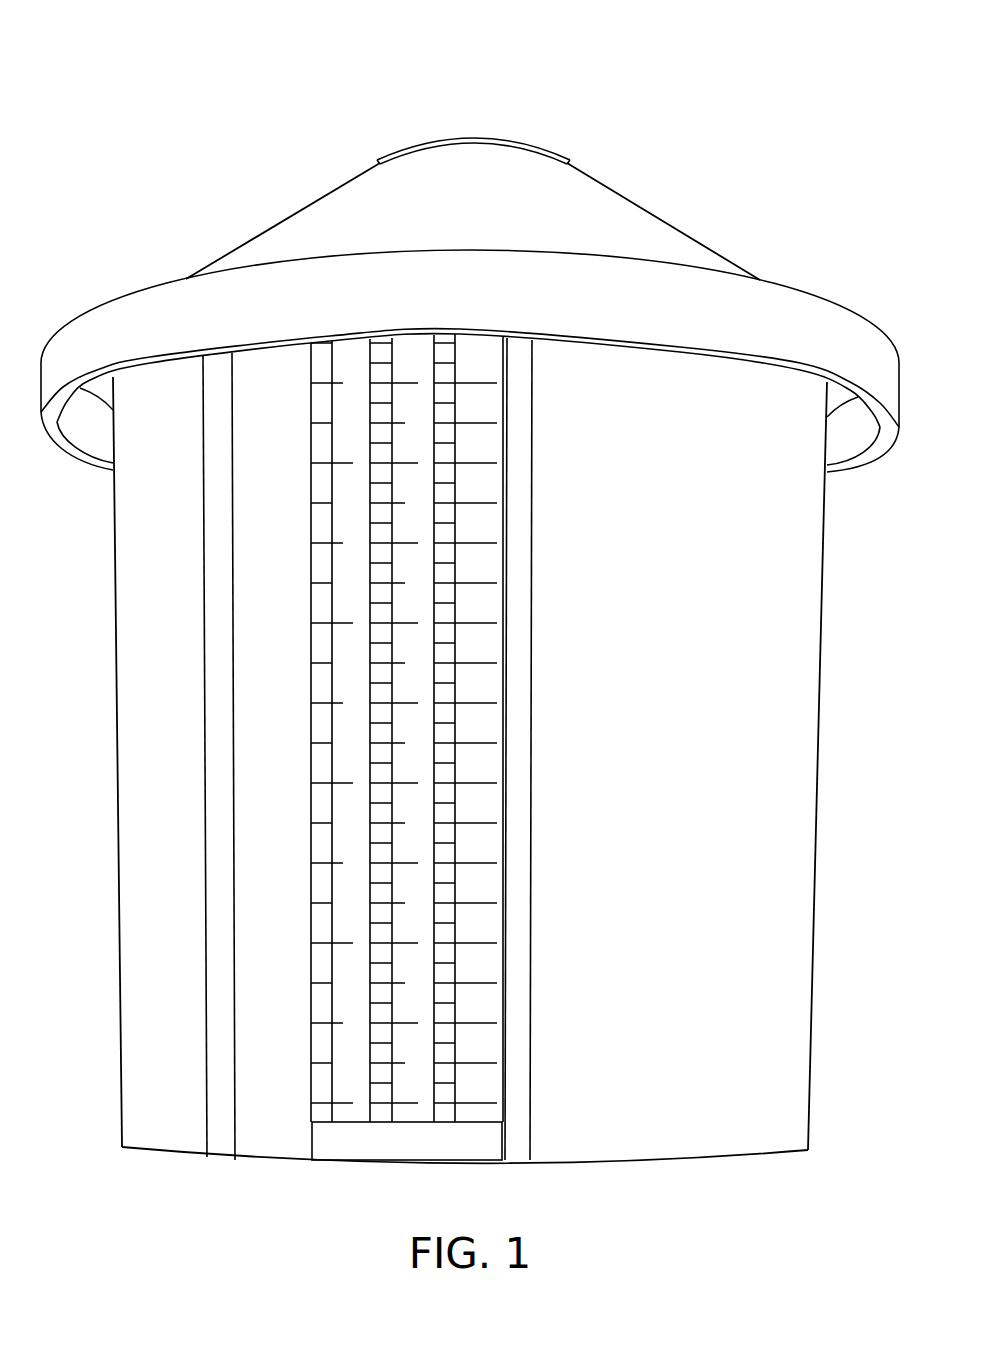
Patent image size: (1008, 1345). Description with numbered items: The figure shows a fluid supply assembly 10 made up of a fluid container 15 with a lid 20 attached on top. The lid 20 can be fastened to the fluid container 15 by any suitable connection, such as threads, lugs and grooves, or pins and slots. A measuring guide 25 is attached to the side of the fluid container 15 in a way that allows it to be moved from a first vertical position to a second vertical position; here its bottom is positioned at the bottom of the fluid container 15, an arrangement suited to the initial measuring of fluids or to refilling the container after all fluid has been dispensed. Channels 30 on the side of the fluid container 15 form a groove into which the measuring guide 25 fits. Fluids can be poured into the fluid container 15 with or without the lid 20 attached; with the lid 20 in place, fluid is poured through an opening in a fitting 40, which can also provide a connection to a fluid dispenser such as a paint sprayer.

The fluid supply assembly 10 is at (117, 152).
The fluid container 15 is at (125, 570).
The lid 20 is at (290, 222).
The measuring guide 25 is at (467, 717).
The channels 30 is at (215, 843).
The fitting 40 is at (533, 147).